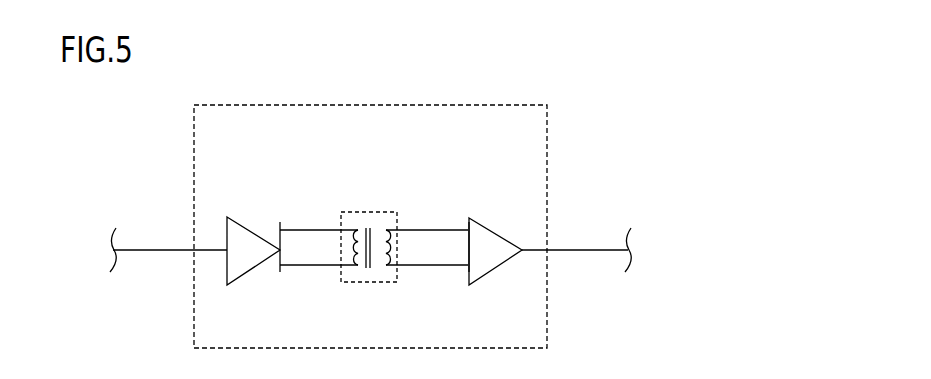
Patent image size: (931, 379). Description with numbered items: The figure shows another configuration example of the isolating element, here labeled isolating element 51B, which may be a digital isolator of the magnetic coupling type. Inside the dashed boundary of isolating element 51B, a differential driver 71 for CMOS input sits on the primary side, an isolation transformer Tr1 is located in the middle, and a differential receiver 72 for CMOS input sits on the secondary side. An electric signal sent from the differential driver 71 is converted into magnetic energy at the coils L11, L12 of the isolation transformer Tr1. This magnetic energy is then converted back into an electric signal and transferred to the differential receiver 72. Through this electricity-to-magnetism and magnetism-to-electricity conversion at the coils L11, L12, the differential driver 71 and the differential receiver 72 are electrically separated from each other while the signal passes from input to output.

The isolating element 51B is at (418, 105).
The differential driver 71 is at (253, 233).
The differential receiver 72 is at (493, 232).
The isolation transformer Tr1 is at (370, 245).
The coil L11 is at (356, 268).
The coil L12 is at (388, 268).